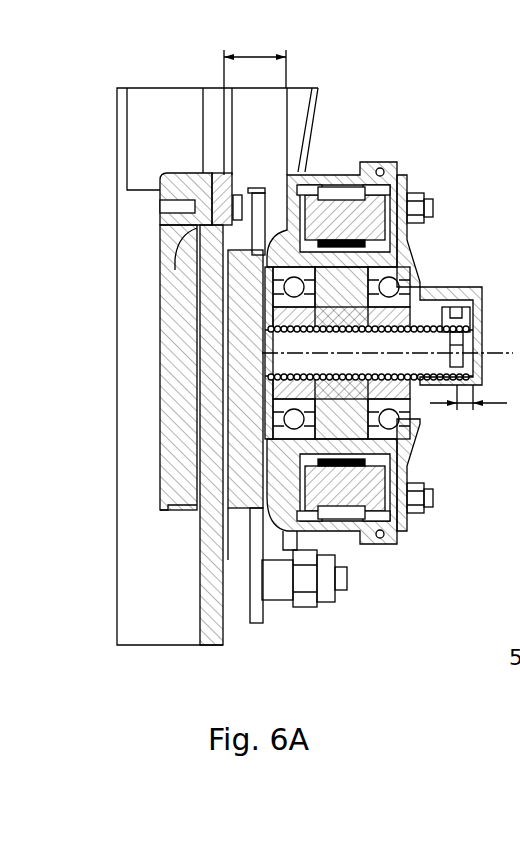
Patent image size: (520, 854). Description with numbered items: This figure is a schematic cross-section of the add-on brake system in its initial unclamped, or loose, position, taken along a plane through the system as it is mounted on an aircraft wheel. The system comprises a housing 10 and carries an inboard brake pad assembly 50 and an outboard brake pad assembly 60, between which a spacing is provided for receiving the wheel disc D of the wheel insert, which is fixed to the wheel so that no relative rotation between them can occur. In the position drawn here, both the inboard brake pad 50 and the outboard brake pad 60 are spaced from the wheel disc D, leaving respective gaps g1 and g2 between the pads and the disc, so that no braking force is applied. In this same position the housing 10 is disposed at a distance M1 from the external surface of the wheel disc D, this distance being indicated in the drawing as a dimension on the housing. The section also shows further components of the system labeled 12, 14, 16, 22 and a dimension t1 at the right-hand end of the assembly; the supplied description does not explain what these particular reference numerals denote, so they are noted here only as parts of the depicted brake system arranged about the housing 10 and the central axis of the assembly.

The housing 10 is at (409, 113).
The flange 12 is at (393, 163).
The housing 14 is at (338, 172).
The hub cap 16 is at (455, 287).
The shaft 22 is at (380, 358).
The inboard brake pad assembly 50 is at (157, 497).
The outboard brake pad assembly 60 is at (238, 524).
The wheel disc D is at (210, 628).
The distance M1 is at (255, 59).
The dimension t1 is at (468, 413).
The gap g1 is at (225, 378).
The gap g2 is at (198, 340).